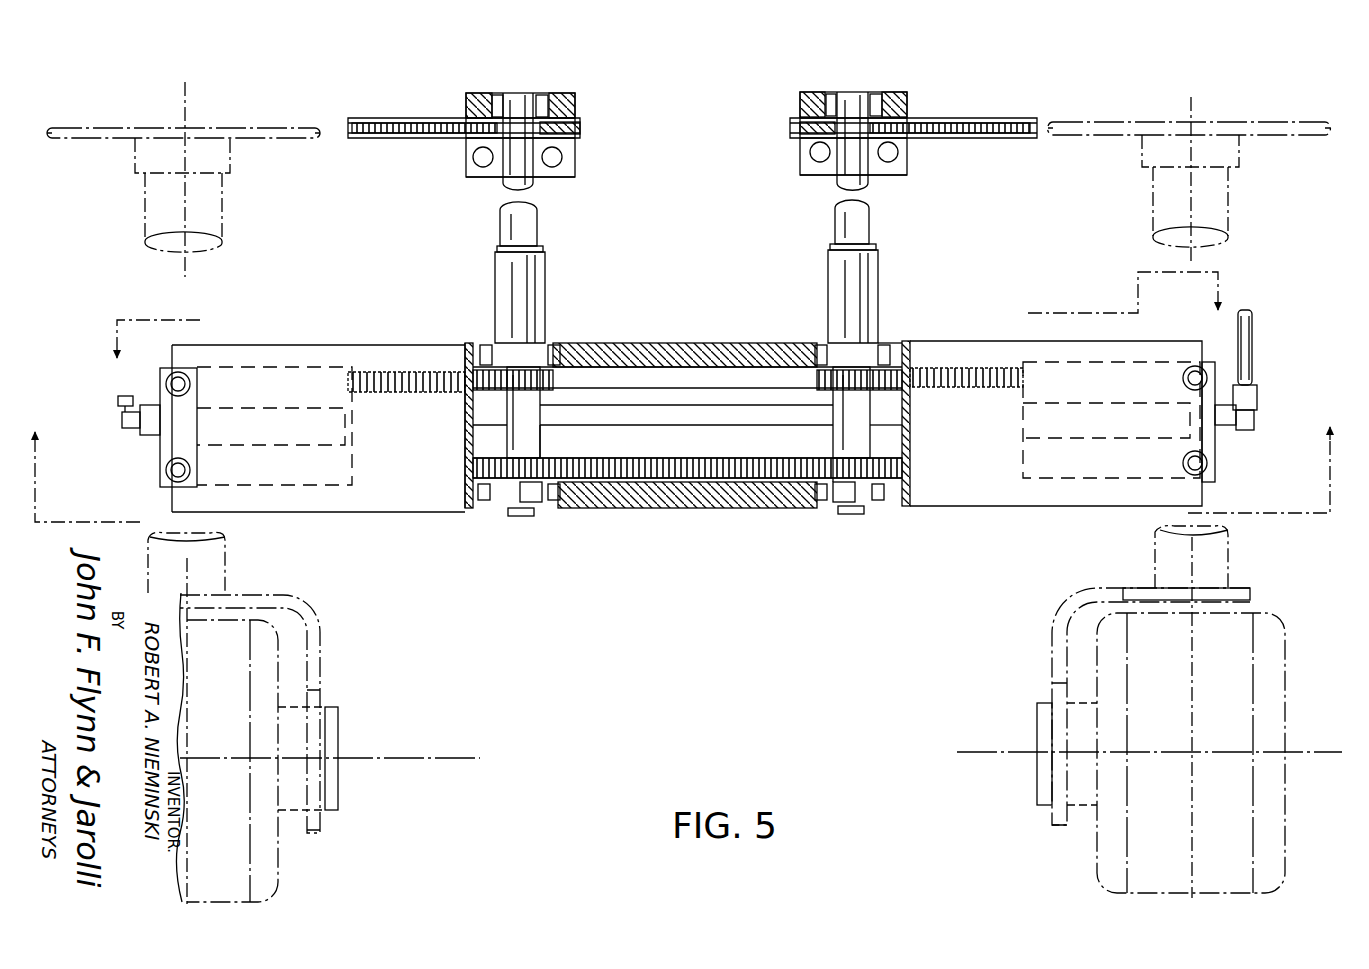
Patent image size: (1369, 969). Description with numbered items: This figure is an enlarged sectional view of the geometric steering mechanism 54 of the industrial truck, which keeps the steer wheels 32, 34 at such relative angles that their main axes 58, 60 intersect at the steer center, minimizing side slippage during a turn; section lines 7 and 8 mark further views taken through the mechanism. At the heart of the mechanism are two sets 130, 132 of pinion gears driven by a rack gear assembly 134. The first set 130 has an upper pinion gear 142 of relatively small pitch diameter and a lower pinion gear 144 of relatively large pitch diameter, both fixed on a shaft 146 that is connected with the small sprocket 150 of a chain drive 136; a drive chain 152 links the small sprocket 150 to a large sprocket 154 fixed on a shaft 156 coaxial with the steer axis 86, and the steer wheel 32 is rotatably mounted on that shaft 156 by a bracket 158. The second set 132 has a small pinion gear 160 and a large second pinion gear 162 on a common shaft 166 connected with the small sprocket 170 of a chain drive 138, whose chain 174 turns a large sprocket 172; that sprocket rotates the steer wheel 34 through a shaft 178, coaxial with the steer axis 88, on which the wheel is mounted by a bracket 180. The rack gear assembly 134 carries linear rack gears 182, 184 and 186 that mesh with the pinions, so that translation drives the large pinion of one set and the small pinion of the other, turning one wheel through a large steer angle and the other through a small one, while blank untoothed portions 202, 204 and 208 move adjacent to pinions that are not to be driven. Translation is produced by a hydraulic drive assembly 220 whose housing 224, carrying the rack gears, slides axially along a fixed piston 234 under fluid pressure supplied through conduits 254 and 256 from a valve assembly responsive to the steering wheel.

The section line 7- 7 is at (683, 458).
The section line 8- 8 is at (660, 335).
The steer wheel 32 is at (250, 862).
The steer wheel 34 is at (1130, 855).
The geometric steering mechanism 54 is at (622, 645).
The main axis 58 is at (403, 735).
The main axis 60 is at (988, 752).
The steer axis 86 is at (187, 100).
The steer axis 88 is at (1193, 100).
The set of pinion gears 130 is at (567, 356).
The pinion gear set 132 is at (808, 355).
The rack gear assembly 134 is at (702, 488).
The chain drive 136 is at (460, 33).
The chain drive 138 is at (1197, 28).
The upper pinion gear 142 is at (573, 360).
The lower pinion gear 144 is at (530, 458).
The shaft 146 is at (505, 420).
The small sprocket 150 is at (583, 128).
The drive chain 152 is at (390, 138).
The large sprocket 154 is at (262, 128).
The shaft 156 is at (215, 202).
The bracket 158 is at (322, 660).
The pinion gear 160 is at (882, 365).
The second pinion gear 162 is at (825, 492).
The common shaft 166 is at (835, 414).
The small sprocket 170 is at (790, 130).
The large sprocket 172 is at (1136, 118).
The chain 174 is at (1033, 88).
The shaft 178 is at (1152, 188).
The bracket 180 is at (1050, 650).
The linear rack gear 182 is at (433, 372).
The linear rack gear 184 is at (698, 470).
The linear rack gear 186 is at (920, 393).
The blank portion 202 is at (675, 385).
The blank portion 204 is at (912, 498).
The blank portion 208 is at (395, 480).
The hydraulic drive assembly 220 is at (1040, 388).
The housing 224 is at (688, 422).
The fixed piston 234 is at (302, 408).
The conduit 254 is at (1255, 376).
The conduit 256 is at (118, 428).